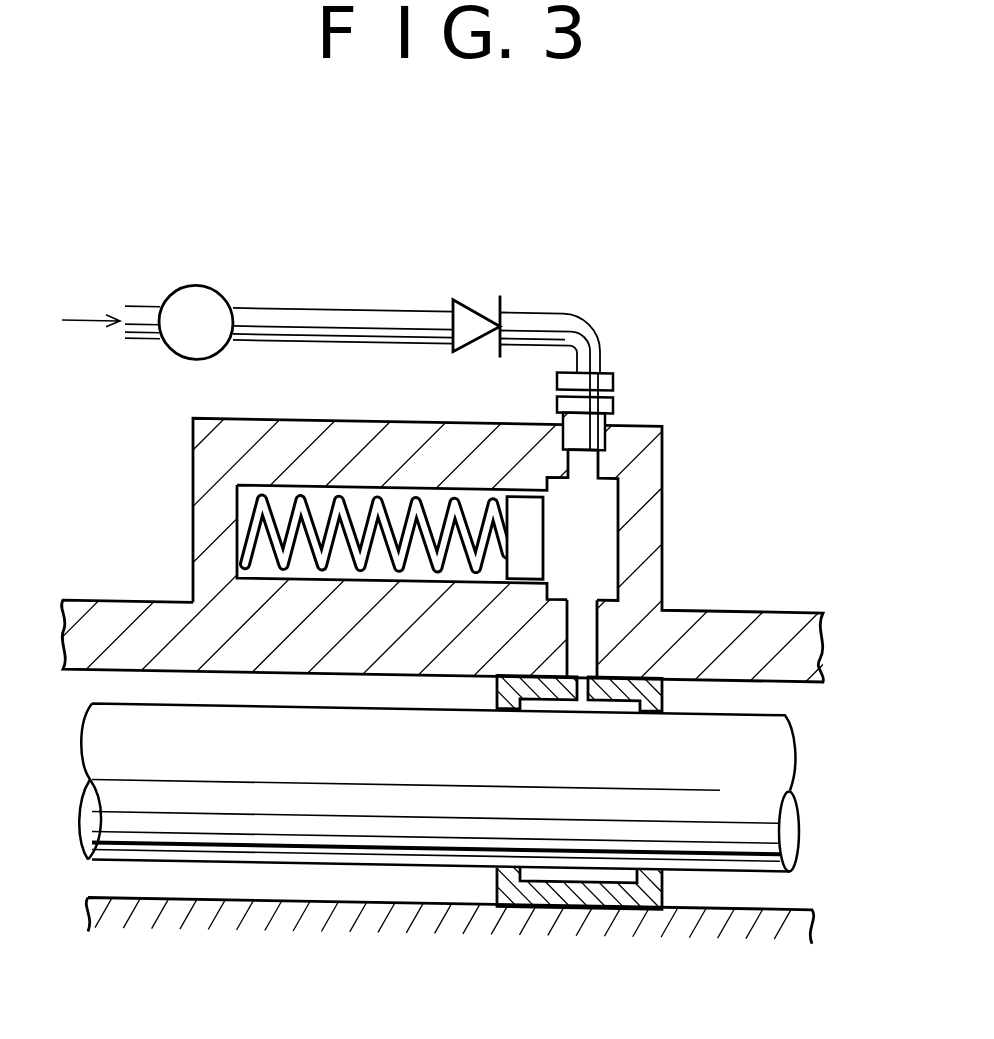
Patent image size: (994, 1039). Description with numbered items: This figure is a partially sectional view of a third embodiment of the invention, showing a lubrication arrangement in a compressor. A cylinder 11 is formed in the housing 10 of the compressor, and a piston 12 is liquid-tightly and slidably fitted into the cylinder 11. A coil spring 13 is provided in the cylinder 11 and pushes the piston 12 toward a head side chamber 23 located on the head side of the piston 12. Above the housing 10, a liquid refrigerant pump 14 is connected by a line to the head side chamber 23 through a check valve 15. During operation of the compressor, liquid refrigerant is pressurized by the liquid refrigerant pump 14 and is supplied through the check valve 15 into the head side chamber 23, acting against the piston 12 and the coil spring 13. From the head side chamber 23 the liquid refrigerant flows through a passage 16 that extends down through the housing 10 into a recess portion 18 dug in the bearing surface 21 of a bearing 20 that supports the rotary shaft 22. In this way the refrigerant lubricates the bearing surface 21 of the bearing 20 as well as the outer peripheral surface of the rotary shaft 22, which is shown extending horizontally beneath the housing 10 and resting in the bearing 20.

The housing 10 is at (782, 597).
The cylinder 11 is at (405, 481).
The piston 12 is at (515, 496).
The coil spring 13 is at (300, 495).
The liquid refrigerant pump 14 is at (220, 289).
The check valve 15 is at (467, 302).
The passage 16 is at (588, 635).
The recess portion 18 is at (603, 697).
The bearing 20 is at (530, 891).
The bearing surface 21 is at (537, 850).
The rotary shaft 22 is at (800, 731).
The head side chamber 23 is at (603, 487).